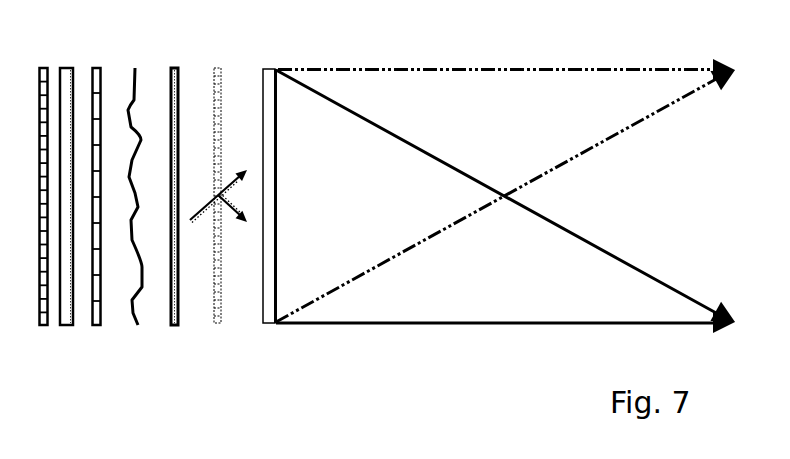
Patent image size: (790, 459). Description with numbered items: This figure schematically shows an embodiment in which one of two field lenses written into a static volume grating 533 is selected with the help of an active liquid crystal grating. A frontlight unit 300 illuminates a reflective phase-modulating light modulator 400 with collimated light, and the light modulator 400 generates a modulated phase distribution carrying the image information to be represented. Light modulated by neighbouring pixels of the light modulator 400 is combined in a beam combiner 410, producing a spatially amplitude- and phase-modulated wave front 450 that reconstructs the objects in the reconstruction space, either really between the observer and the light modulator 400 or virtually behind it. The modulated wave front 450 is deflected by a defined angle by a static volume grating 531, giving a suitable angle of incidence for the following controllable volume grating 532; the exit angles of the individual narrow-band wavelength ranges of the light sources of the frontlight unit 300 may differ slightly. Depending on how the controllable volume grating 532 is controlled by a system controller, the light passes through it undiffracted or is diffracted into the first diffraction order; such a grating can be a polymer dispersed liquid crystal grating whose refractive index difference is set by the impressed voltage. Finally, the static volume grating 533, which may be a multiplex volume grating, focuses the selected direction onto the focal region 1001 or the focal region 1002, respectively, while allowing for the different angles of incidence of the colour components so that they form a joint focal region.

The frontlight unit 300 is at (65, 66).
The reflective phase-modulating light modulator 400 is at (43, 326).
The beam combiner 410 is at (96, 326).
The modulated wave front 450 is at (135, 66).
The static volume grating 531 is at (174, 327).
The controllable volume grating 532 is at (216, 66).
The static volume grating 533 is at (270, 325).
The focal region 1001 is at (738, 66).
The focal region 1002 is at (735, 325).